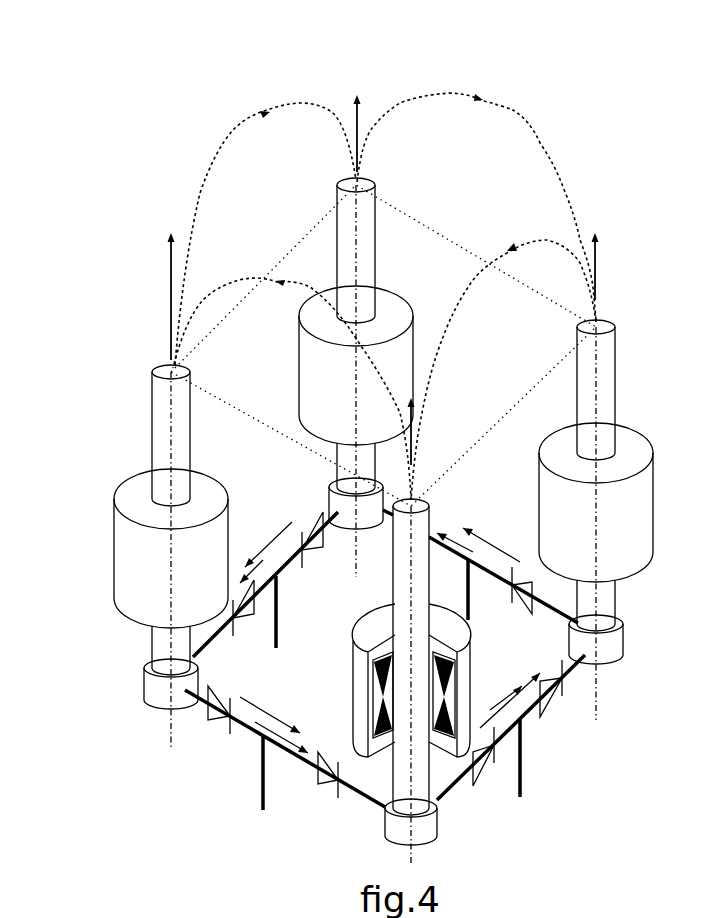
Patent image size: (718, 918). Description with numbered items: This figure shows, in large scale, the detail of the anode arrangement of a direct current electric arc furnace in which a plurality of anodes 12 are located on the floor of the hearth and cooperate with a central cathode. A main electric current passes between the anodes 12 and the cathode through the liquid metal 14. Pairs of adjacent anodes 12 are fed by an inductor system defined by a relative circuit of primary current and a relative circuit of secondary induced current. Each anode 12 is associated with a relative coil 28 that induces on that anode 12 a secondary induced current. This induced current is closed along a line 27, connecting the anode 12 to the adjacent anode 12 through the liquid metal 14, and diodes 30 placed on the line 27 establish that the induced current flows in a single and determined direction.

The anode 12 is at (163, 411).
The liquid metal 14 is at (467, 168).
The line 27 is at (248, 752).
The coil 28 is at (442, 722).
The diode 30 is at (318, 538).